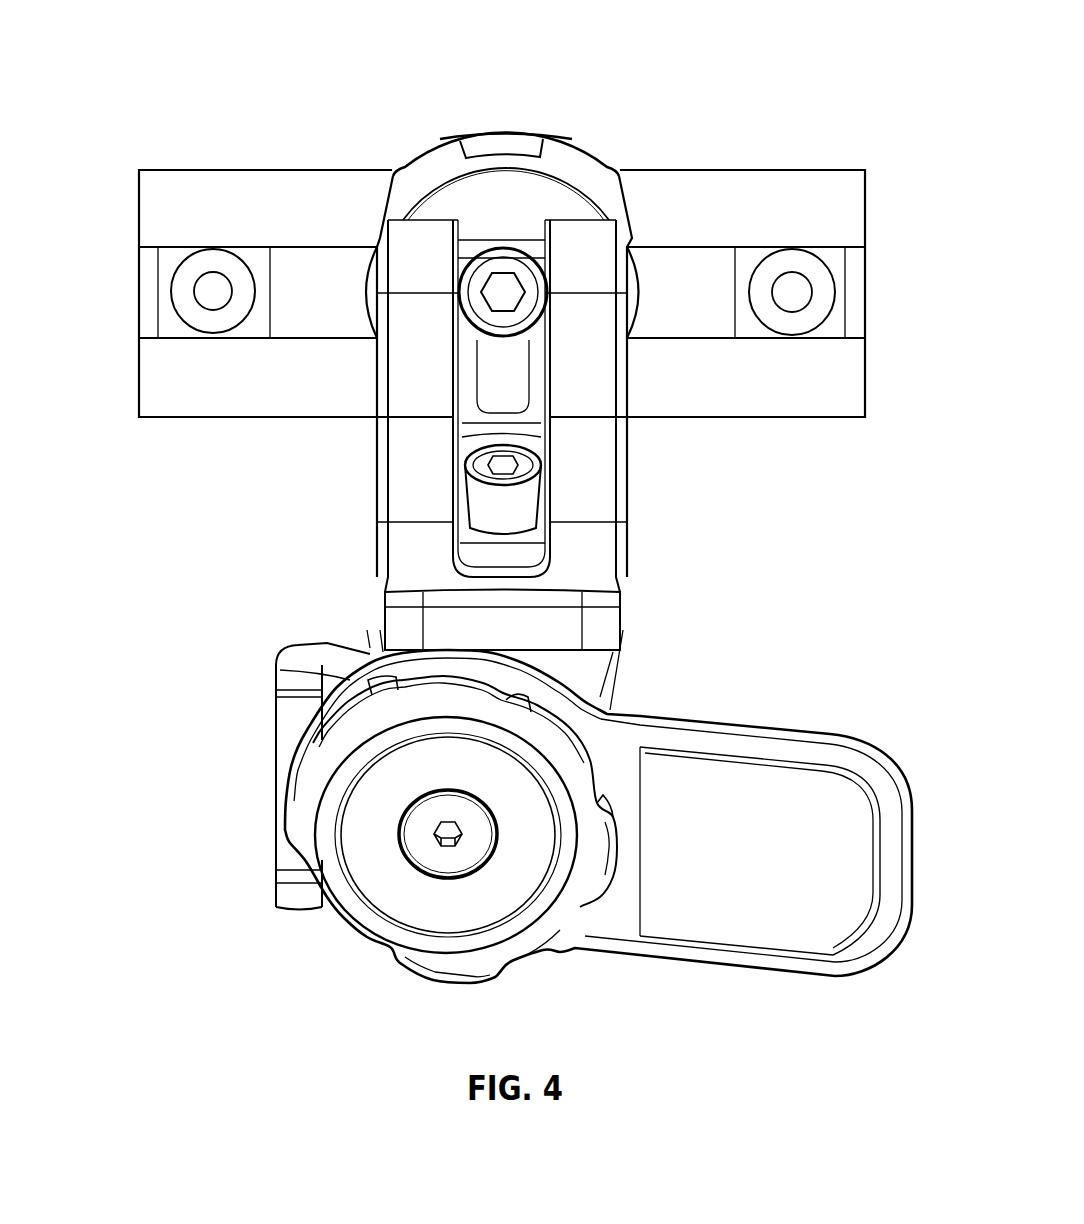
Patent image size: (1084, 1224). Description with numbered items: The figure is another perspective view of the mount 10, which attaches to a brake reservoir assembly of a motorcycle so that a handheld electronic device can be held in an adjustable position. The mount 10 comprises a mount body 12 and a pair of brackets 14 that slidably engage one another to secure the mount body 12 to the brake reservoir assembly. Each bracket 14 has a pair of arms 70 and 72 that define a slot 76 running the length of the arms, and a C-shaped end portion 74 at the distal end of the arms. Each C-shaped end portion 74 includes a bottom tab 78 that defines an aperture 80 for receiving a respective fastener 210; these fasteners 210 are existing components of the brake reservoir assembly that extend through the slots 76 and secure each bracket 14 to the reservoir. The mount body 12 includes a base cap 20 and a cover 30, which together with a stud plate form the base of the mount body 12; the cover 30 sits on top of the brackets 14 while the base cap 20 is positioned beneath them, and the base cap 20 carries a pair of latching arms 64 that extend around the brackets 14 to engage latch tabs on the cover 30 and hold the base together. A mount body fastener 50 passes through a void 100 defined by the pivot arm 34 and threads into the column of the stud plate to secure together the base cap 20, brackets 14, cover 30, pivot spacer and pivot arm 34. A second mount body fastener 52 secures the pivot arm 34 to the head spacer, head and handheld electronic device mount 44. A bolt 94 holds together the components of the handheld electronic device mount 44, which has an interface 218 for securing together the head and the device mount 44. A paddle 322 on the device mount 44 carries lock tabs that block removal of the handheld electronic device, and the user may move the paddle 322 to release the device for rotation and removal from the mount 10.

The mount 10 is at (628, 493).
The mount body 12 is at (627, 536).
The brackets 14 is at (272, 178).
The base cap 20 is at (477, 140).
The cover 30 is at (572, 158).
The pivot arm 34 is at (397, 515).
The handheld electronic device mount 44 is at (678, 960).
The mount body fastener 50 is at (475, 297).
The mount body fastener 52 is at (470, 500).
The latching arms 64 is at (510, 132).
The arm 70 is at (818, 178).
The arm 72 is at (203, 178).
The C-shaped end portion 74 is at (140, 176).
The slot 76 is at (332, 250).
The bottom tab 78 is at (170, 262).
The aperture 80 is at (185, 288).
The bolt 94 is at (442, 858).
The void 100 is at (458, 415).
The fasteners 210 is at (183, 320).
The interface 218 is at (360, 860).
The paddle 322 is at (792, 768).